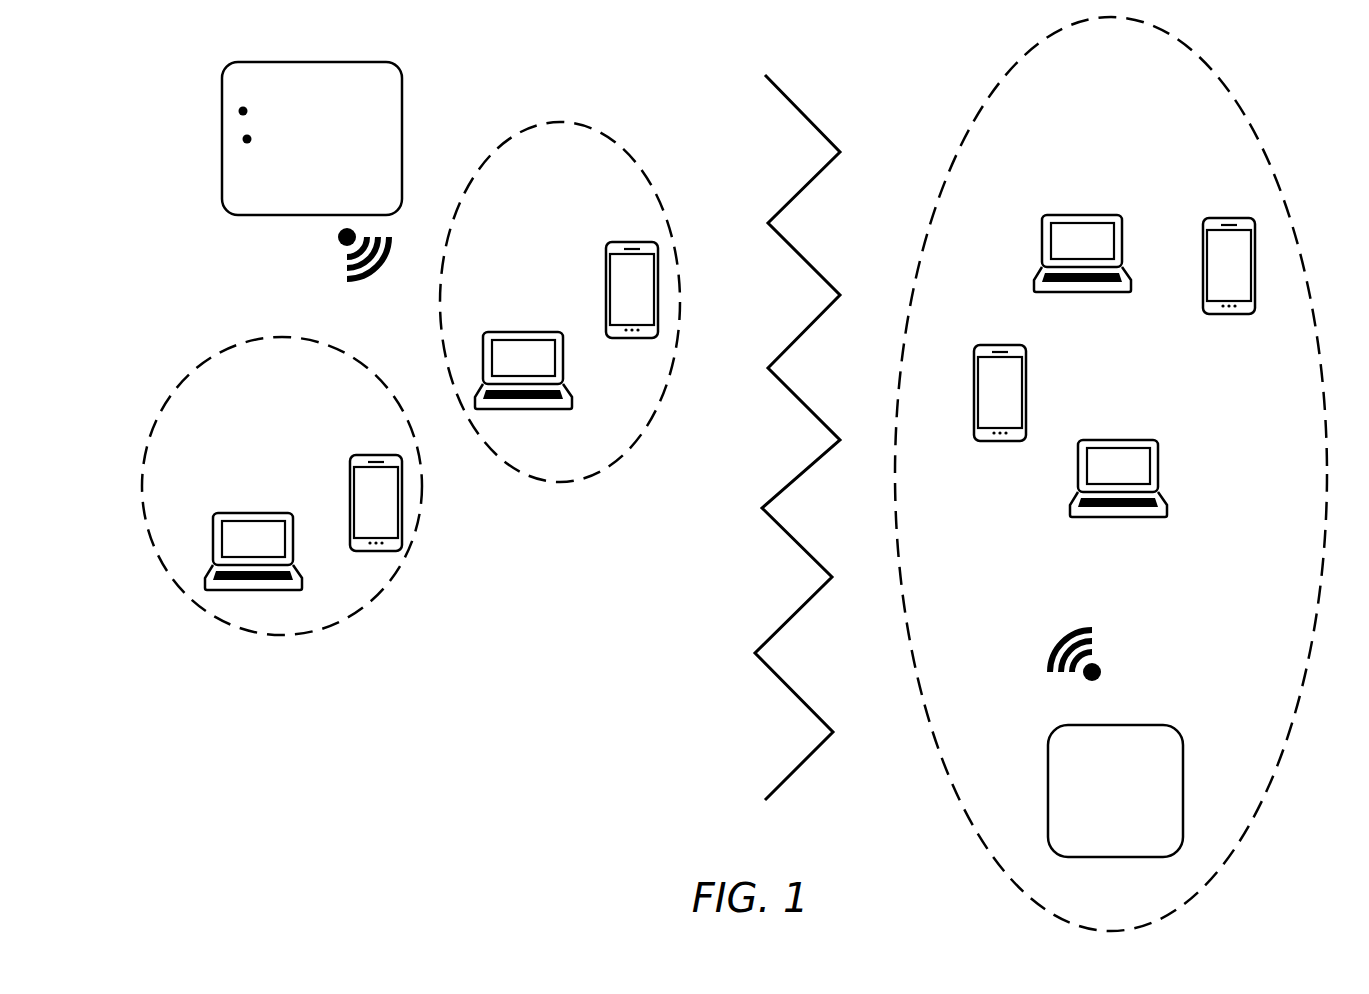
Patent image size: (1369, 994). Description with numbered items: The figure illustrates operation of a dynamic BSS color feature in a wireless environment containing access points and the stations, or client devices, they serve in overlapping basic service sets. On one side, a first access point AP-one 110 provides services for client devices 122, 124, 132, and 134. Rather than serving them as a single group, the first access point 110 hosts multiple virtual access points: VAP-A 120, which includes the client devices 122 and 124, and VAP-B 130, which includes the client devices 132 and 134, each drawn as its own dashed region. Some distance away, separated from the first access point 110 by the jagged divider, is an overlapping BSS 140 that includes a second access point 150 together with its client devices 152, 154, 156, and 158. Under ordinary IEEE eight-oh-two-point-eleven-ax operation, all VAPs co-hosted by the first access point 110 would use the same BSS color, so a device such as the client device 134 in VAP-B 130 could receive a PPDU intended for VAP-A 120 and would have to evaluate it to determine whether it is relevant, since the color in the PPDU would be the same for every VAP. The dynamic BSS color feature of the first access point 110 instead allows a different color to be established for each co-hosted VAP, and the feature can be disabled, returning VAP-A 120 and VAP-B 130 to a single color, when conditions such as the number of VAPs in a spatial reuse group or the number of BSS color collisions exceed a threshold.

The first access point (AP-1) 110 is at (312, 170).
The VAP-A 120 is at (355, 610).
The client device 122 is at (277, 512).
The client device 124 is at (381, 455).
The VAP-B 130 is at (597, 467).
The client device 132 is at (520, 333).
The client device 134 is at (622, 243).
The overlapping BSS (OBSS) 140 is at (970, 138).
The second access point (AP-2) 150 is at (1115, 743).
The client device 152 is at (1083, 215).
The client device 154 is at (1222, 218).
The client device 156 is at (1143, 440).
The client device 158 is at (988, 345).